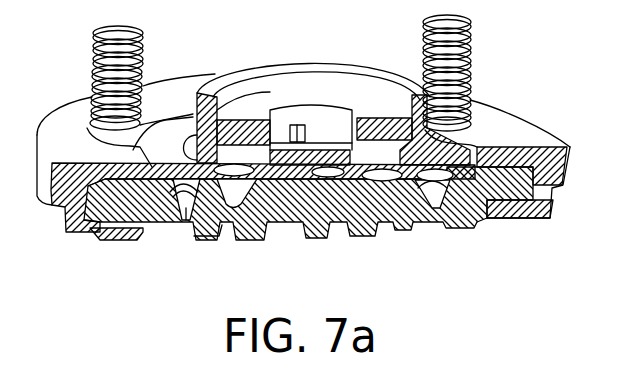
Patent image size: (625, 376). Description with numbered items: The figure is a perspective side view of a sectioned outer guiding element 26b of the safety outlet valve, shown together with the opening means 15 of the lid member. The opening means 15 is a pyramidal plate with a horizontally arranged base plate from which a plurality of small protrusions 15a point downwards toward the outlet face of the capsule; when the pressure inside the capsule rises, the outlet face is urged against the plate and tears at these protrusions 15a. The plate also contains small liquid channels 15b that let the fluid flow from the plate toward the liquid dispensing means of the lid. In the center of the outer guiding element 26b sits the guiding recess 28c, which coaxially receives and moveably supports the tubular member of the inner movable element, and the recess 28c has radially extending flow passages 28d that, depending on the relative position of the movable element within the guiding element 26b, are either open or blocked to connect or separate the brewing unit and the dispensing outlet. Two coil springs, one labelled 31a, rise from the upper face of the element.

The opening means 15 is at (484, 190).
The protrusions 15a is at (305, 238).
The liquid channels 15b is at (186, 220).
The outer guiding element 26b is at (376, 100).
The guiding recess 28c is at (320, 120).
The radially extending flow passages 28d is at (291, 125).
The coil spring 31a is at (473, 44).